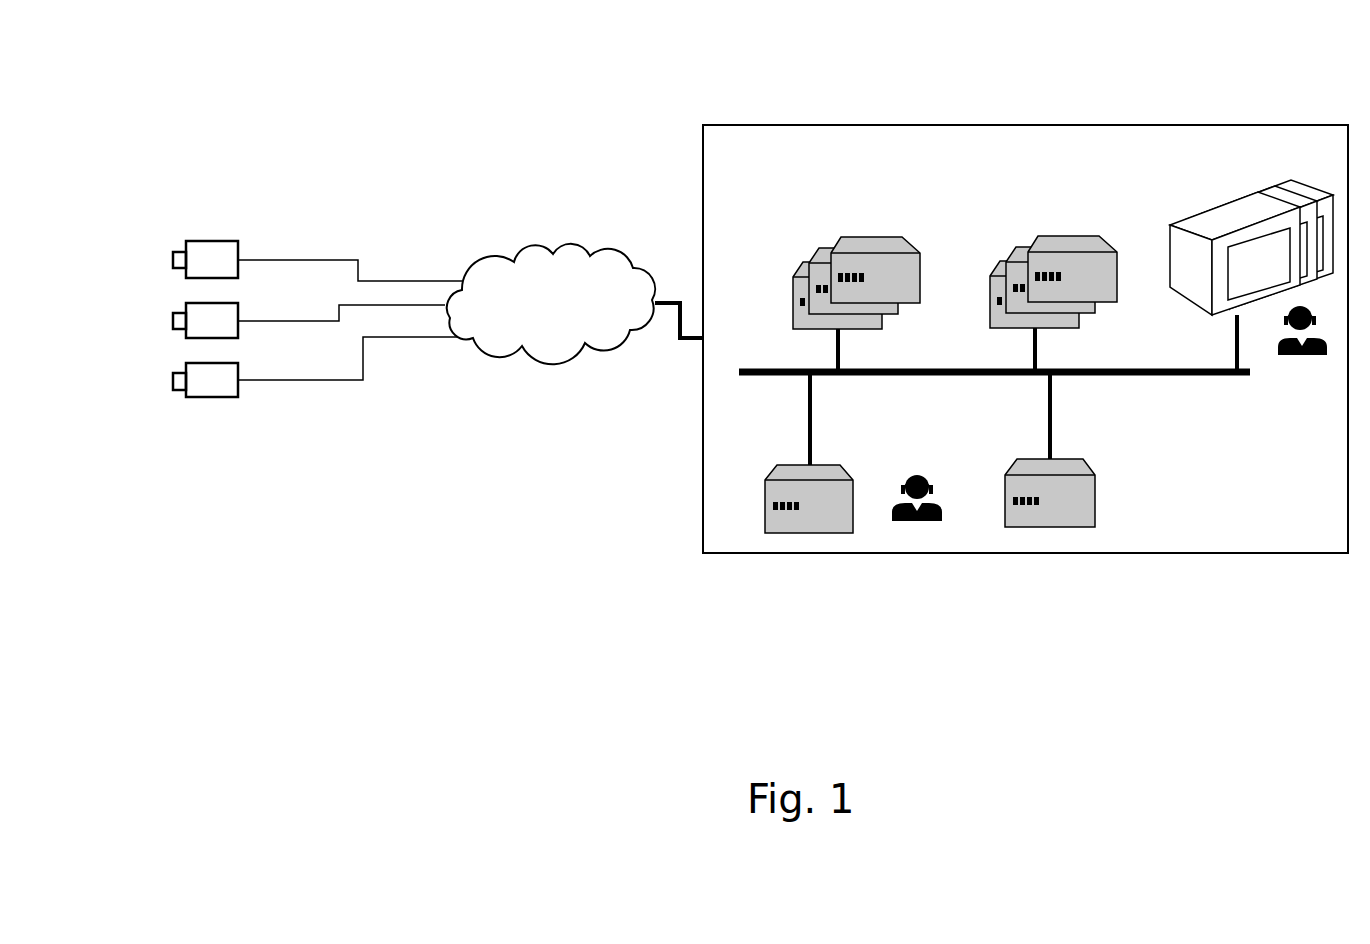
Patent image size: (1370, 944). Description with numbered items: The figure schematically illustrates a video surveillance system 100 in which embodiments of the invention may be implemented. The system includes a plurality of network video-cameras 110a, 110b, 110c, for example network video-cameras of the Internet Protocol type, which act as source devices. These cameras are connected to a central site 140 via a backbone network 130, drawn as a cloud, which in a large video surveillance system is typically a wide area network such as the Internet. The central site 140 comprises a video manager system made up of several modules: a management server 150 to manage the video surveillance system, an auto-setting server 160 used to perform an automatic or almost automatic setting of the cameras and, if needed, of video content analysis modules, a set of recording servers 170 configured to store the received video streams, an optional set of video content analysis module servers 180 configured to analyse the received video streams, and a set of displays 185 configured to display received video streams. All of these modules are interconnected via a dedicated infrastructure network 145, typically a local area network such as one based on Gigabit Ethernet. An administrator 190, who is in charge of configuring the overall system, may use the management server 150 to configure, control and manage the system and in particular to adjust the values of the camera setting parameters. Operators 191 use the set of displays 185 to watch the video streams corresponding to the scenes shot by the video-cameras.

The video surveillance system 100 is at (337, 94).
The network video-camera 110a is at (172, 264).
The network video-camera 110b is at (172, 324).
The network video-camera 110c is at (172, 384).
The backbone network 130 is at (562, 250).
The central site 140 is at (926, 125).
The dedicated infrastructure network 145 is at (1115, 377).
The management server 150 is at (791, 466).
The auto-setting server 160 is at (1095, 490).
The set of recording servers 170 is at (818, 256).
The set of video content analysis module servers 180 is at (1013, 252).
The set of displays 185 is at (1191, 216).
The administrator 190 is at (927, 468).
The operator 191 is at (1301, 358).